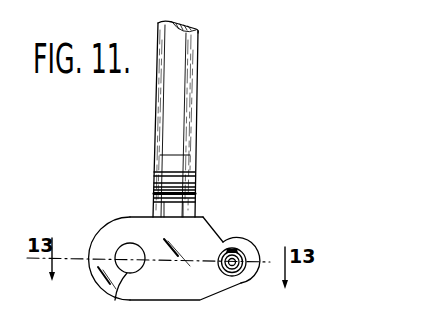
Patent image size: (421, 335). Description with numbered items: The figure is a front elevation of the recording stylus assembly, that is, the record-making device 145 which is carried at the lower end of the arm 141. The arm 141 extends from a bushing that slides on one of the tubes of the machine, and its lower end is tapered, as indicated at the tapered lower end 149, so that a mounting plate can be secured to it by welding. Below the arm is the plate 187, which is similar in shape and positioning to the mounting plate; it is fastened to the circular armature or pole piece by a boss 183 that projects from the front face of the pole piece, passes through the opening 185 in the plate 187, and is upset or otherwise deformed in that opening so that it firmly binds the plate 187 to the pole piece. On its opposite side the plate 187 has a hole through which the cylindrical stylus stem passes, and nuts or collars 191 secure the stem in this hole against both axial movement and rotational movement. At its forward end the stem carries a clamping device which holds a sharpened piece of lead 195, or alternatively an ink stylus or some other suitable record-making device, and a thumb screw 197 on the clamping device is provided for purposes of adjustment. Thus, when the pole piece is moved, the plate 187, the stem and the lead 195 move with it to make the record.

The arm 141 is at (191, 118).
The record-making device 145 is at (216, 209).
The tapered lower end of arm 149 is at (152, 193).
The boss 183 is at (115, 299).
The opening 185 is at (110, 224).
The plate 187 is at (208, 236).
The nuts or collars 191 is at (250, 276).
The sharpened piece of lead 195 is at (235, 278).
The thumb screw 197 is at (240, 246).